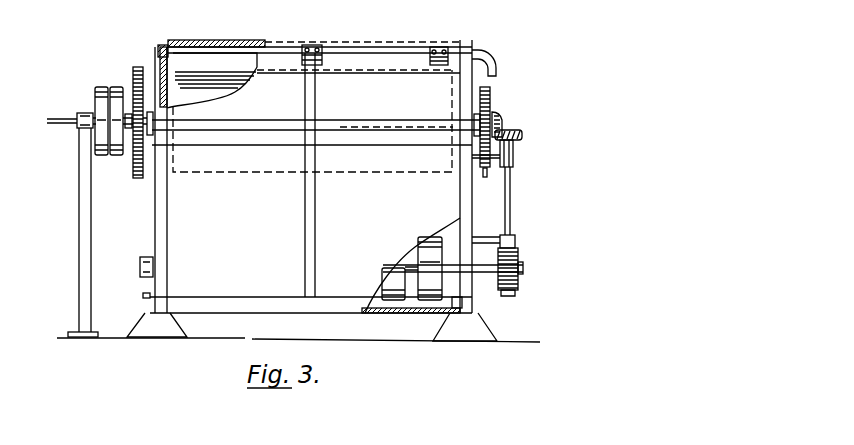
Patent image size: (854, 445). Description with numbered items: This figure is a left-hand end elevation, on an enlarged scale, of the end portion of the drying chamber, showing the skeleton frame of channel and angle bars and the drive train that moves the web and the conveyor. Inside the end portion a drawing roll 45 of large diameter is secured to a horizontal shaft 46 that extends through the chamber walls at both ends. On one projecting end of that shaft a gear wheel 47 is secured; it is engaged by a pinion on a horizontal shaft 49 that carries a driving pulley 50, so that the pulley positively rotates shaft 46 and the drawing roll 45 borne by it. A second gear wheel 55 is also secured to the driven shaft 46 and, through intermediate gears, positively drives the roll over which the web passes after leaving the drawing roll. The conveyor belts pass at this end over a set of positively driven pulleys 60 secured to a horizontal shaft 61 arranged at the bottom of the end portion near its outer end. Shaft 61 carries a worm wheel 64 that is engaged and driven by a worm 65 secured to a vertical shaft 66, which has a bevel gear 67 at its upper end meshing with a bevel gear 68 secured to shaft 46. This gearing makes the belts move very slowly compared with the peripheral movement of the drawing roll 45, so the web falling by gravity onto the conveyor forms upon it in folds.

The drawing roll 45 is at (190, 84).
The horizontal shaft 46 is at (455, 127).
The gear wheel 47 is at (137, 66).
The horizontal shaft 49 is at (76, 121).
The driving pulley 50 is at (101, 86).
The gear wheel 55 is at (491, 103).
The positively driven pulleys 60 is at (418, 248).
The horizontal shaft 61 is at (487, 275).
The worm wheel 64 is at (506, 292).
The worm 65 is at (519, 285).
The vertical shaft 66 is at (511, 205).
The bevel gear 67 is at (522, 136).
The bevel gear 68 is at (502, 122).